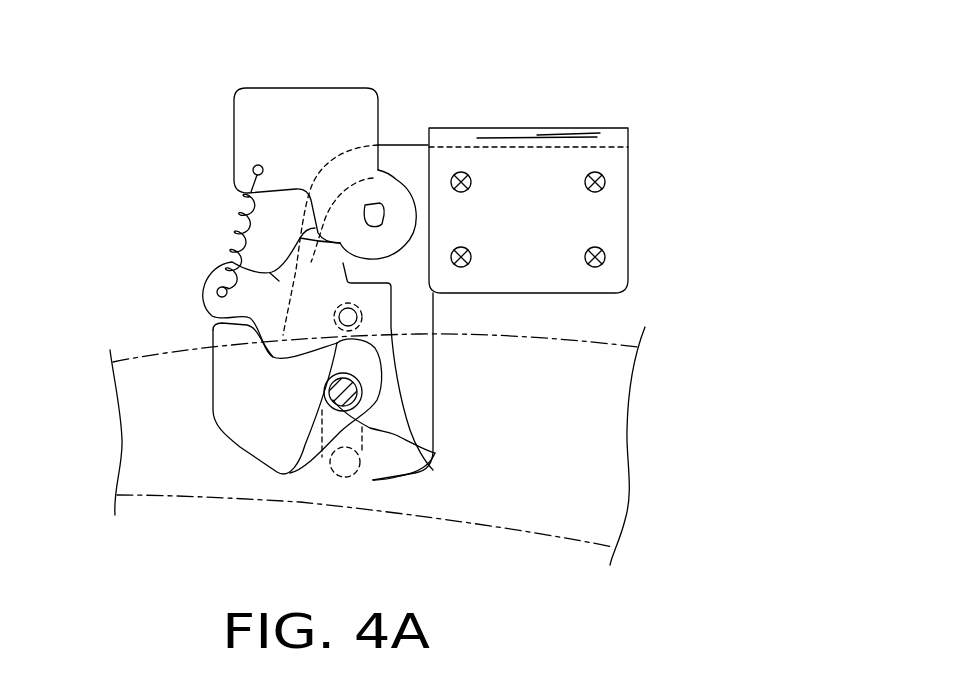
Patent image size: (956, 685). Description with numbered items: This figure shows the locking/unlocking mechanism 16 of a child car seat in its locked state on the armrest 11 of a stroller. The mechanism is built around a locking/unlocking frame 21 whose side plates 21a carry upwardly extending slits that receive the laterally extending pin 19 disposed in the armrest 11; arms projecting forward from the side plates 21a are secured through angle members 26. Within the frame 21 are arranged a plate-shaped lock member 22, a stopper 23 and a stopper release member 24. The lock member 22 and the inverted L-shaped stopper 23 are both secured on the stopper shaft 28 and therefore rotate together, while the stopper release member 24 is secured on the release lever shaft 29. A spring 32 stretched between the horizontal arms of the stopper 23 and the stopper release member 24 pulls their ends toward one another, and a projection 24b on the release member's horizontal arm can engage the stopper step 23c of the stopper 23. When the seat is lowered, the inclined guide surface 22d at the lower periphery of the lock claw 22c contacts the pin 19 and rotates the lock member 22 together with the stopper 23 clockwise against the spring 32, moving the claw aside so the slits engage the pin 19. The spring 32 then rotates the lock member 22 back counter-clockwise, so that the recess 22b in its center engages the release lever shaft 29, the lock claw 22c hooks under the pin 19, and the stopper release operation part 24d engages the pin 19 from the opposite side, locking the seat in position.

The armrest 11 is at (153, 355).
The locking/unlocking mechanism 16 is at (215, 180).
The pin 19 is at (343, 400).
The locking/unlocking frame 21 is at (427, 390).
The side plate 21a is at (357, 480).
The lock member 22 is at (290, 387).
The recess 22b is at (367, 310).
The lock claw 22c is at (350, 432).
The guide surface 22d is at (323, 455).
The stopper 23 is at (303, 107).
The stopper step 23c is at (365, 283).
The stopper release member 24 is at (223, 263).
The projection 24b is at (307, 245).
The stopper release operation part 24d is at (370, 430).
The angle member 26 is at (543, 163).
The stopper shaft 28 is at (375, 211).
The release lever shaft 29 is at (355, 322).
The spring 32 is at (227, 210).